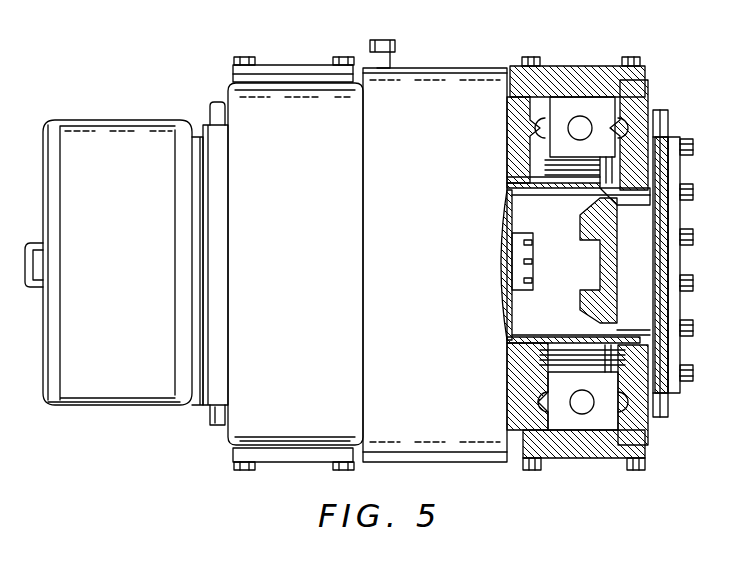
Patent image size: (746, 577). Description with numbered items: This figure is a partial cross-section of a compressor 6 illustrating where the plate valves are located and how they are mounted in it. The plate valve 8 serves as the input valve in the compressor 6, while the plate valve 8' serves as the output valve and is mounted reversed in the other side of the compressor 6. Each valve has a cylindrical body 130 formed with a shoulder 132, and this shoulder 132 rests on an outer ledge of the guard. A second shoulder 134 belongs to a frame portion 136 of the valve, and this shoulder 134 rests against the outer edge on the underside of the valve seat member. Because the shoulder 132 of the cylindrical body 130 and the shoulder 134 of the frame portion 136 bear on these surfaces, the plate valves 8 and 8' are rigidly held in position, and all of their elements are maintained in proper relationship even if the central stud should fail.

The compressor 6 is at (438, 68).
The cylindrical body 130 is at (585, 105).
The shoulder 132 is at (540, 162).
The shoulder 134 is at (575, 183).
The frame portion 136 is at (507, 178).
The plate valve 8 is at (601, 259).
The plate valve 8' is at (573, 322).